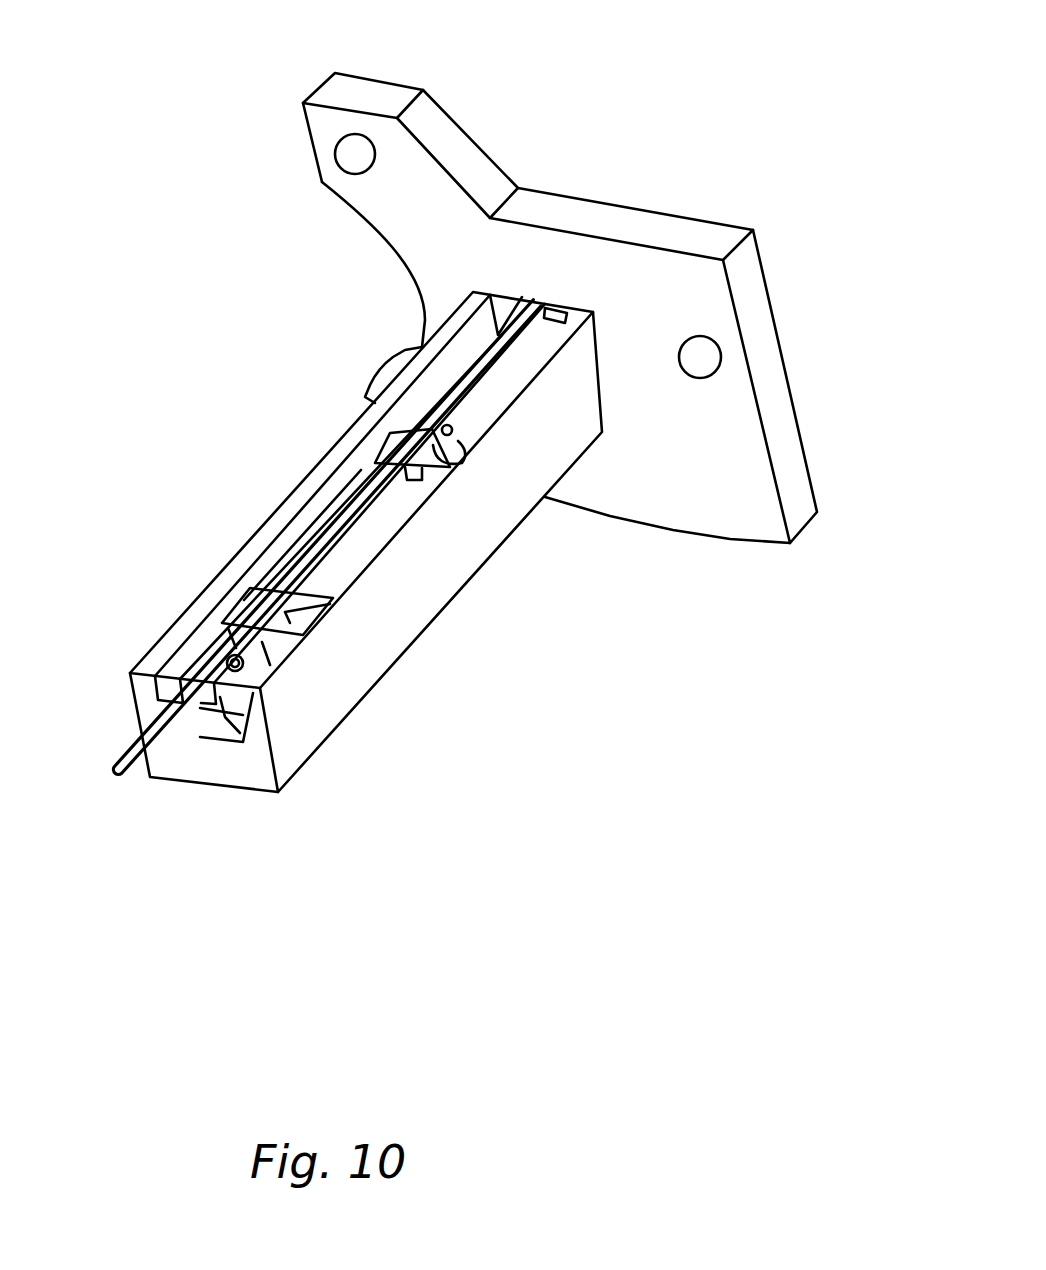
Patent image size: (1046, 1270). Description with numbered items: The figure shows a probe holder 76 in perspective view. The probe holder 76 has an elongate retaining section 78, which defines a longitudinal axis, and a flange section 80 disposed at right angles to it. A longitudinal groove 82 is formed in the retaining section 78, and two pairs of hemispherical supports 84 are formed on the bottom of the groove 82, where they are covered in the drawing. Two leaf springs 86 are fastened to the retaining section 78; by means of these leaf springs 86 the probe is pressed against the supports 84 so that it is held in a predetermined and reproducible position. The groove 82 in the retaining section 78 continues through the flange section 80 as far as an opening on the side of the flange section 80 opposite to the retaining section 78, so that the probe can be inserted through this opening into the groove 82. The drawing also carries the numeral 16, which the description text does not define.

The probe holder 76 is at (622, 72).
The flange section 80 is at (693, 233).
The retaining section 78 is at (452, 578).
The longitudinal groove 82 is at (347, 475).
The leaf springs 86 is at (393, 448).
The hemispherical supports 84 is at (248, 668).
The receiving channel 16 is at (223, 677).